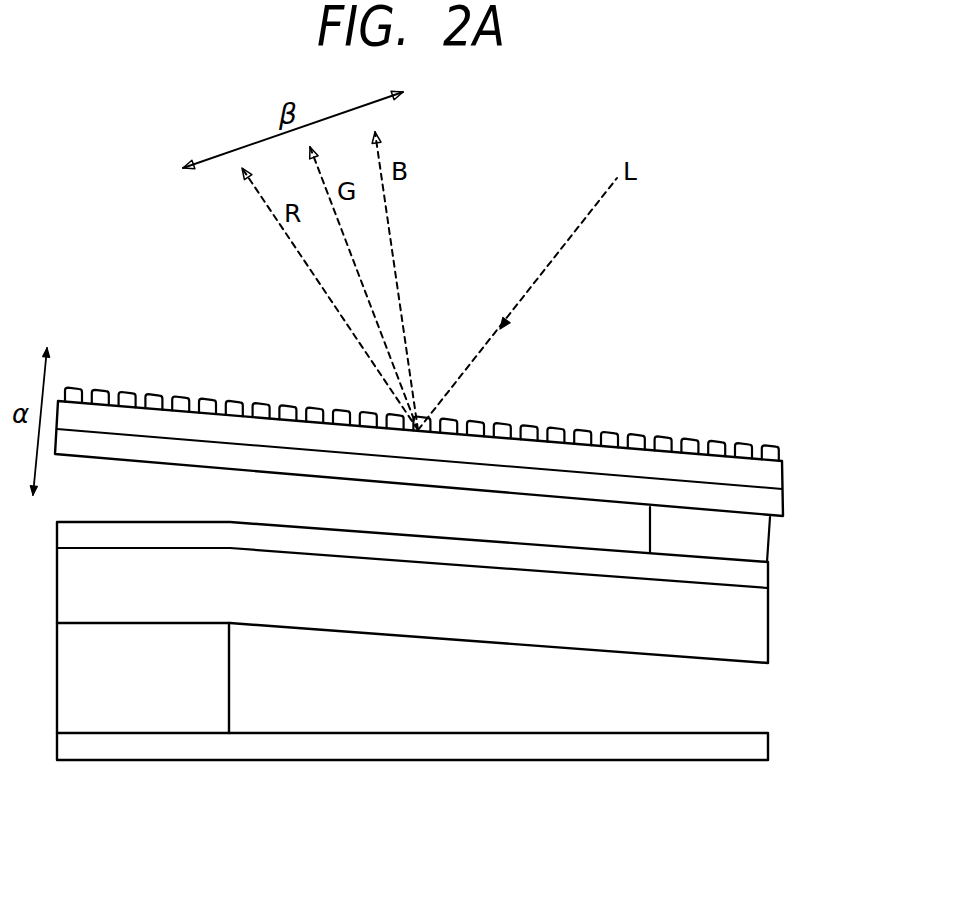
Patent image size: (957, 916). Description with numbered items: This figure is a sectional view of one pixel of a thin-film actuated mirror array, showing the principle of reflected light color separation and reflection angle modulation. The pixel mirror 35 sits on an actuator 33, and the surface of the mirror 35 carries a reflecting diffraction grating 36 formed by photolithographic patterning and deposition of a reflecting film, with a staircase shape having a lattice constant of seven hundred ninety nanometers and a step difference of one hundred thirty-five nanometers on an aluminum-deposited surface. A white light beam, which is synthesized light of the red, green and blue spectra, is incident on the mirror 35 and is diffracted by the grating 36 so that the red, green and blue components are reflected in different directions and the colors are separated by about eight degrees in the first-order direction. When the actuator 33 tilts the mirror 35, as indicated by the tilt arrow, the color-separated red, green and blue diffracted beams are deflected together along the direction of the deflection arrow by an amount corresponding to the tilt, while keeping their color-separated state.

The actuator 33 is at (803, 732).
The mirror 35 is at (788, 478).
The reflecting diffraction grating 36 is at (637, 443).